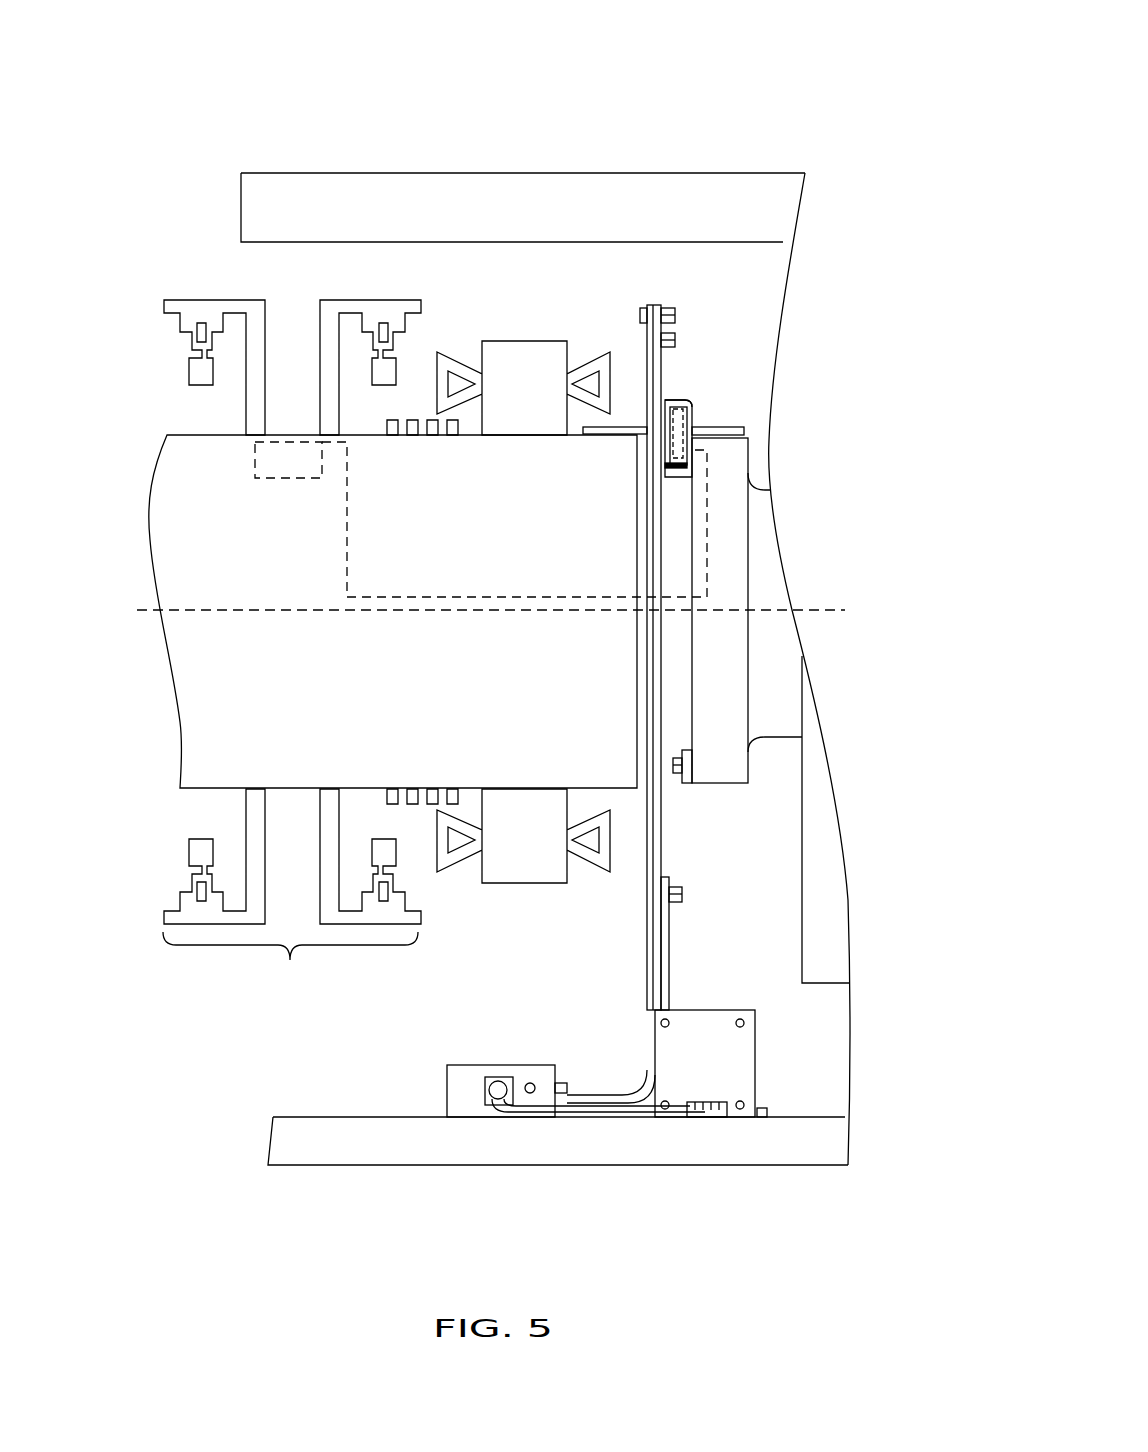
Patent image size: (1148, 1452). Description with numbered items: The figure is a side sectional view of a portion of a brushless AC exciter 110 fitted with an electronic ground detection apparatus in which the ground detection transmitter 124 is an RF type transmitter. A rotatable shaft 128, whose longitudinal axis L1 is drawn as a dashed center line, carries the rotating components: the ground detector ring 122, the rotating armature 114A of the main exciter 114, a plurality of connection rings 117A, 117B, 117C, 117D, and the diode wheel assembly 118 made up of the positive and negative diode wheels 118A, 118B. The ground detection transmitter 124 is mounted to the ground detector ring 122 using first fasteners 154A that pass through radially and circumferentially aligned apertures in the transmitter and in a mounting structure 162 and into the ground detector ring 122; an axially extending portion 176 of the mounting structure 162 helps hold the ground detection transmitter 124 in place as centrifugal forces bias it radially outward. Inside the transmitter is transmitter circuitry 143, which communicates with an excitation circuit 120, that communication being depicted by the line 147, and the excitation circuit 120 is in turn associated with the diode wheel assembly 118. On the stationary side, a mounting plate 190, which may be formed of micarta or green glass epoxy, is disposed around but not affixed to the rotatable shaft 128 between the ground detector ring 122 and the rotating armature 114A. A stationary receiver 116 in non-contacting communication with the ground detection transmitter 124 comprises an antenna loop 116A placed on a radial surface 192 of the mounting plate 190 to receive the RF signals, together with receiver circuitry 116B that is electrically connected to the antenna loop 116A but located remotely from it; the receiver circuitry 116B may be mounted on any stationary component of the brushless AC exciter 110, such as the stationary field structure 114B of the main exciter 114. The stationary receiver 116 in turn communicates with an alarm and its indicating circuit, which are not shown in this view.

The brushless AC exciter 110 is at (608, 82).
The main exciter 114 is at (523, 571).
The rotating armature of main exciter 114A is at (526, 432).
The stationary field structure of main exciter 114B is at (513, 190).
The stationary receiver 116 is at (607, 718).
The antenna loop 116A is at (665, 368).
The receiver circuitry 116B is at (678, 1092).
The connection ring 117A is at (393, 440).
The connection ring 117B is at (413, 792).
The connection ring 117C is at (433, 440).
The connection ring 117D is at (452, 792).
The diode wheel assembly 118 is at (292, 621).
The positive diode wheel 118A is at (202, 300).
The negative diode wheel 118B is at (385, 300).
The excitation circuit 120 is at (317, 473).
The ground detector ring 122 is at (718, 770).
The ground detection transmitter 124 is at (741, 394).
The rotatable shaft 128 is at (763, 517).
The transmitter circuitry 143 is at (697, 407).
The line 147 is at (372, 600).
The first fasteners 154A is at (663, 458).
The mounting structure 162 is at (744, 431).
The axially extending portion 176 is at (692, 418).
The mounting plate 190 is at (663, 920).
The radial surface 192 is at (665, 853).
The longitudinal axis L1 is at (480, 611).